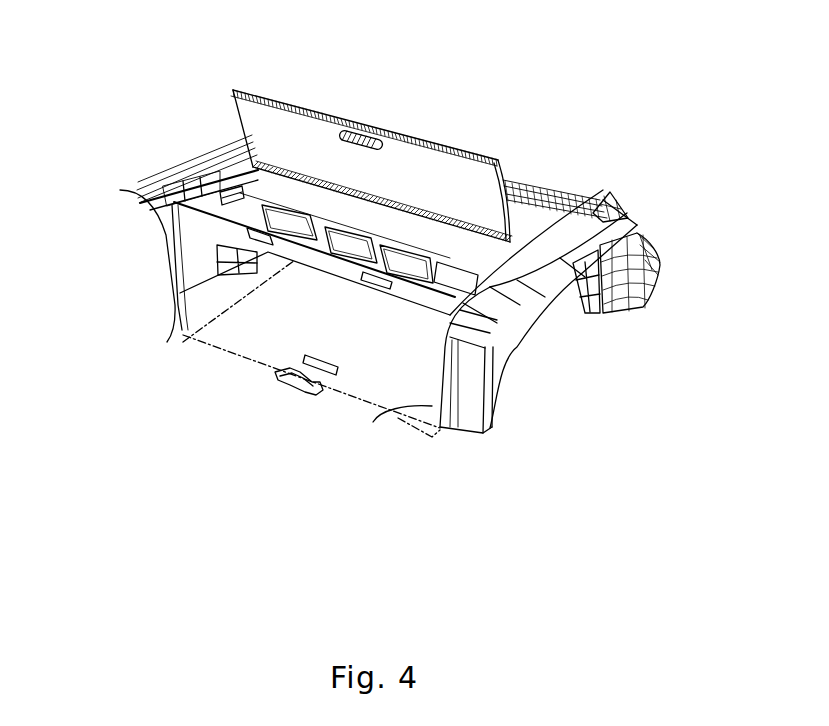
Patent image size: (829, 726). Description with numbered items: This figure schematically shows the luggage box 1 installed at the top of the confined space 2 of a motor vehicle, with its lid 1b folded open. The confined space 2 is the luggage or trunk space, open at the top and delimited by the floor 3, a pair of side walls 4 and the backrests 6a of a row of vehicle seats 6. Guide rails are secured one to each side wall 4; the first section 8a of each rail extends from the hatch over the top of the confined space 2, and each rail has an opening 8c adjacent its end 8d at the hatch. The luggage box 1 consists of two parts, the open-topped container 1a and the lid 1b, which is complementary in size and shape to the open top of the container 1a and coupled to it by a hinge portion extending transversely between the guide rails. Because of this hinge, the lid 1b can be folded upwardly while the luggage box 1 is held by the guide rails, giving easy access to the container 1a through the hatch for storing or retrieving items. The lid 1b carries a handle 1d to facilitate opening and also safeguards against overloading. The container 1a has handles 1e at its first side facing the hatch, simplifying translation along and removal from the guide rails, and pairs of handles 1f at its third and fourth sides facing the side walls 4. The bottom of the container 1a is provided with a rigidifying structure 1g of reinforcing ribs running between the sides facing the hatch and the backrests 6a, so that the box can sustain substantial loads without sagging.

The luggage box 1 is at (441, 134).
The container 1a is at (255, 198).
The lid 1b is at (291, 100).
The handle 1d is at (367, 132).
The handle 1e is at (173, 298).
The handle 1f is at (236, 197).
The rigidifying structure 1g is at (307, 240).
The confined space 2 is at (355, 333).
The floor 3 is at (287, 343).
The side wall 4 is at (183, 334).
The vehicle seat 6 is at (588, 175).
The backrest 6a is at (533, 188).
The first section 8a is at (232, 178).
The opening 8c is at (178, 206).
The end 8d is at (180, 204).